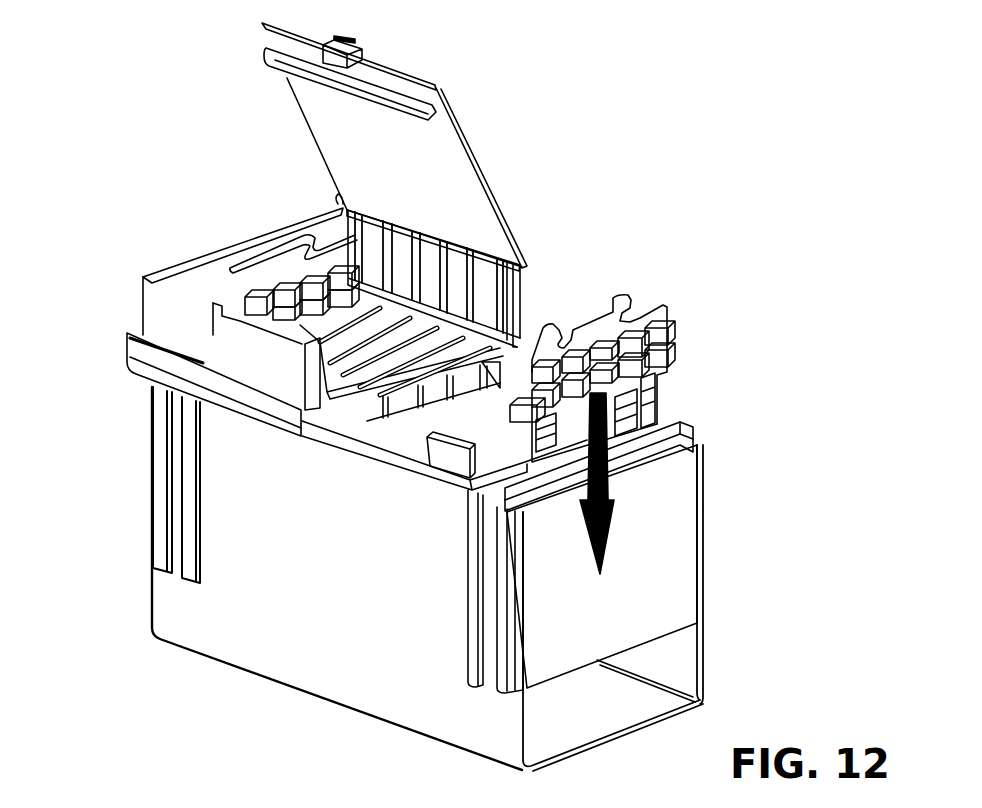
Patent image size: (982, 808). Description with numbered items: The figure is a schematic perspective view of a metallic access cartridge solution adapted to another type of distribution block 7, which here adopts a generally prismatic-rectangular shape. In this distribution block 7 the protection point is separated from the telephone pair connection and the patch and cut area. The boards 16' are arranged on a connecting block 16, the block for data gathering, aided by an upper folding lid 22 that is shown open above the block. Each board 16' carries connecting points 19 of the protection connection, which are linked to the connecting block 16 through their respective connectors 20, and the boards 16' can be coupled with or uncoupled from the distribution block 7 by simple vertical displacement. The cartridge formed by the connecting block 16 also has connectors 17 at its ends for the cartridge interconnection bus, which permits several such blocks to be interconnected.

The upper folding lid 22 is at (435, 163).
The connecting block 16 is at (255, 236).
The boards 16' is at (604, 278).
The connectors 17 is at (447, 453).
The connecting points 19 is at (670, 430).
The distribution block 7 is at (657, 502).
The connectors 20 is at (477, 493).